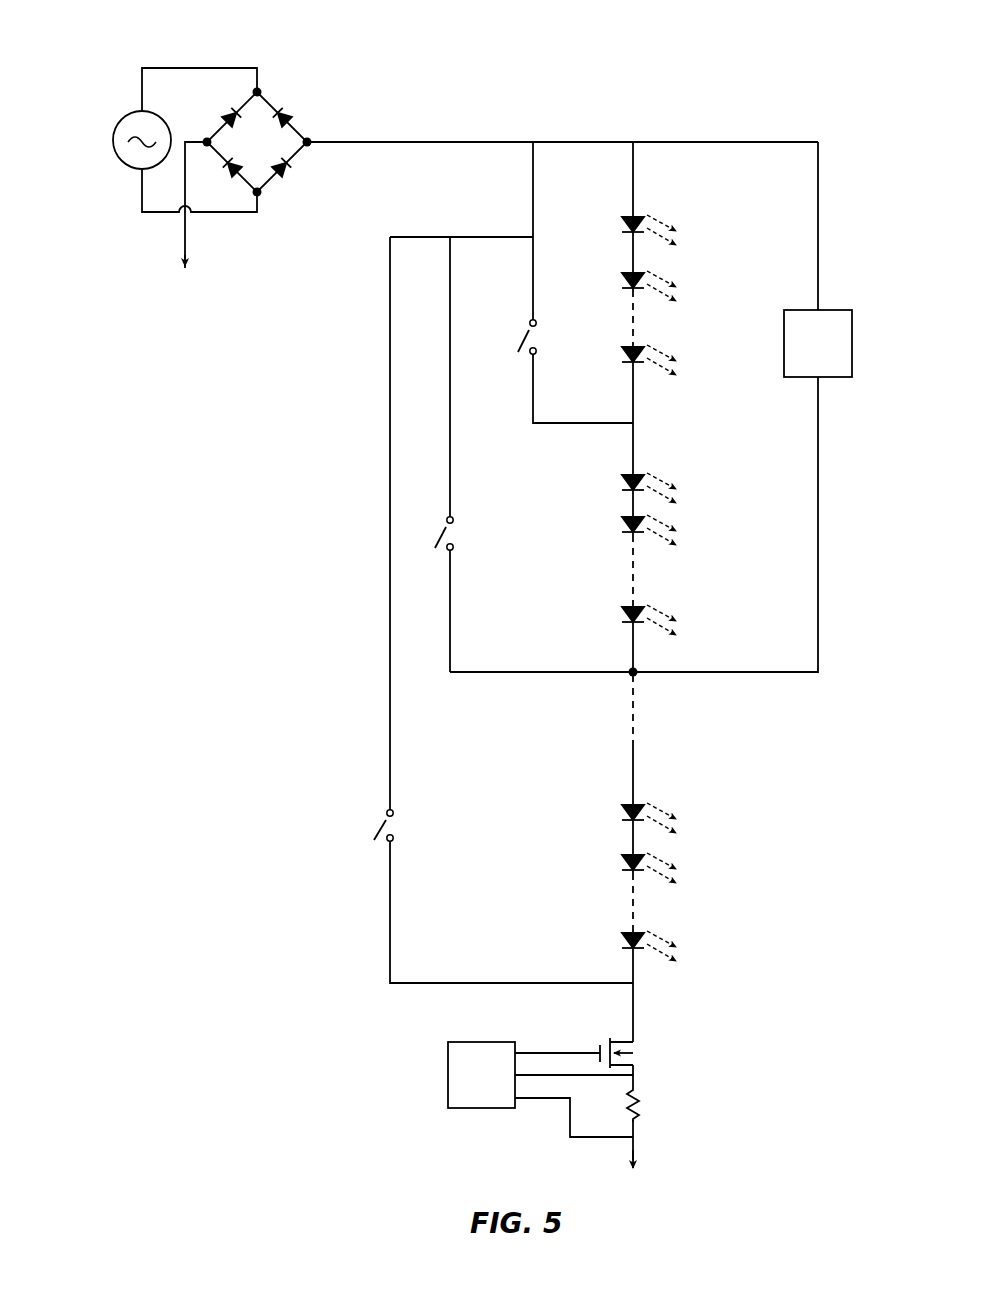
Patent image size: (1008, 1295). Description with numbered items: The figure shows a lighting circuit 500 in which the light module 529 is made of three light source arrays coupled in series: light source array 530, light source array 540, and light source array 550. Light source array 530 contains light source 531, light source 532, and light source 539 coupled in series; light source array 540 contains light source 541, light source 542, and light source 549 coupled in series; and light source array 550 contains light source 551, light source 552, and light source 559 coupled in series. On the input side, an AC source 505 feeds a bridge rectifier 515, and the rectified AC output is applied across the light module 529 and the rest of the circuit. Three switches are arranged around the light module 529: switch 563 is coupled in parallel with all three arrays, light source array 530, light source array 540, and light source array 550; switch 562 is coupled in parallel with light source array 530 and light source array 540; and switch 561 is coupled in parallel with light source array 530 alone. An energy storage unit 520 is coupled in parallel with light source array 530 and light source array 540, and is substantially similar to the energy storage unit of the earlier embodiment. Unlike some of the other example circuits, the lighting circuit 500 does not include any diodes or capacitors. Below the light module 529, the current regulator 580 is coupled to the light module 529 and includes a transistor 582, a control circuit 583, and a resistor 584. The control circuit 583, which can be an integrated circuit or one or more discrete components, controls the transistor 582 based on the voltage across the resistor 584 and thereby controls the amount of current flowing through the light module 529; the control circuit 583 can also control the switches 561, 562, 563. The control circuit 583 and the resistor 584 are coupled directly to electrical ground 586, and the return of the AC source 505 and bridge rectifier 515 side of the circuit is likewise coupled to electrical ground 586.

The lighting circuit 500 is at (742, 48).
The AC source 505 is at (121, 113).
The bridge rectifier 515 is at (307, 93).
The energy storage unit 520 is at (651, 407).
The light module 529 is at (614, 118).
The light source array 530 is at (668, 204).
The light source 531 is at (630, 220).
The light source 532 is at (630, 276).
The light source 539 is at (630, 349).
The light source array 540 is at (680, 456).
The light source 541 is at (630, 478).
The light source 542 is at (630, 519).
The light source 549 is at (630, 609).
The light source array 550 is at (655, 787).
The light source 551 is at (630, 809).
The light source 552 is at (630, 858).
The light source 559 is at (630, 934).
The switch 561 is at (522, 338).
The switch 562 is at (440, 536).
The switch 563 is at (380, 827).
The current regulator 580 is at (416, 1040).
The transistor 582 is at (639, 1059).
The control circuit 583 is at (540, 1089).
The resistor 584 is at (640, 1113).
The electrical ground 586 is at (184, 269).